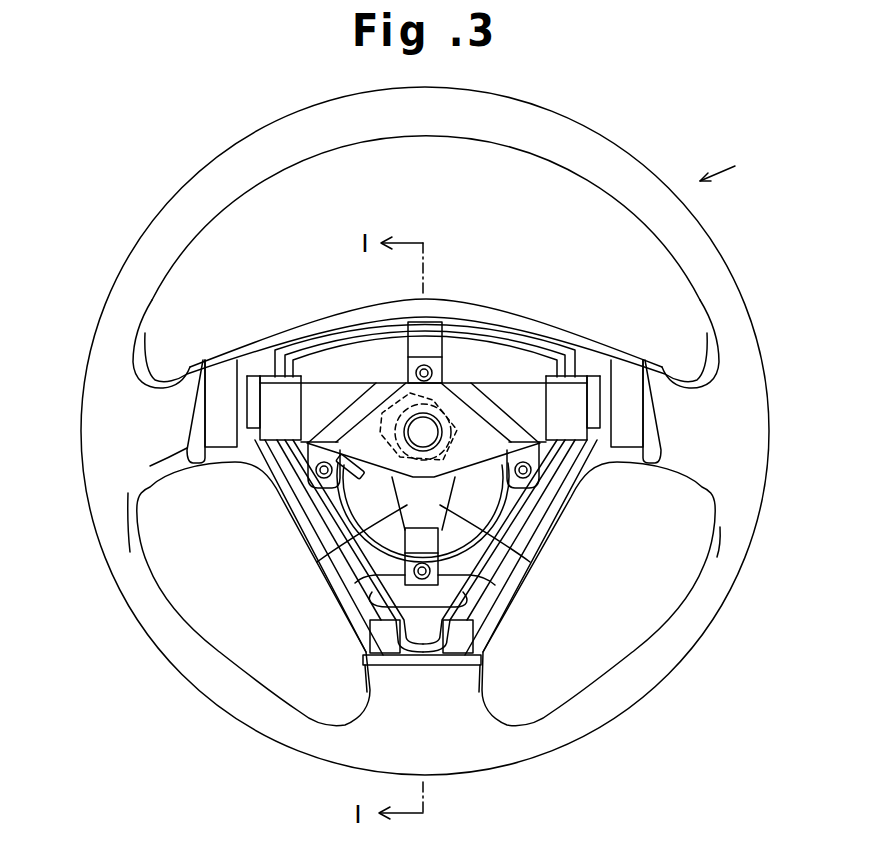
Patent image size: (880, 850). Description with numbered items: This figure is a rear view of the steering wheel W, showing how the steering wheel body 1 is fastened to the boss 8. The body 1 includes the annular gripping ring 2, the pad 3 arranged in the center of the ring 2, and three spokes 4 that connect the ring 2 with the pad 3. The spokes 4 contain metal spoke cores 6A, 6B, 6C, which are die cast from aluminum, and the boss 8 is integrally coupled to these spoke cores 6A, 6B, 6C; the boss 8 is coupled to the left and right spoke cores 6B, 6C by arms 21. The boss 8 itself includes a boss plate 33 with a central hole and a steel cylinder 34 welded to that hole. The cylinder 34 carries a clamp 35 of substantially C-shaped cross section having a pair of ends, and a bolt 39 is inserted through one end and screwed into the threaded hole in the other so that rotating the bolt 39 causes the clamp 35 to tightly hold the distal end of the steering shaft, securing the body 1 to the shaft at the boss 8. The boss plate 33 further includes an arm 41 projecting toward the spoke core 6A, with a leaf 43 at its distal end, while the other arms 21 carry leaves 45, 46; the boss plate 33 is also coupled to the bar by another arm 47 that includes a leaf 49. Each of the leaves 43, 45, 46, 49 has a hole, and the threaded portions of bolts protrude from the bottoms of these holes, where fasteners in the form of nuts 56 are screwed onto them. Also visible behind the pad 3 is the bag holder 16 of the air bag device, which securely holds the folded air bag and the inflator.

The body 1 is at (118, 621).
The gripping ring 2 is at (552, 110).
The steering wheel W is at (735, 171).
The pad 3 is at (568, 509).
The spokes 4 is at (182, 368).
The spoke core 6A is at (458, 636).
The spoke core 6B is at (633, 453).
The spoke core 6C is at (213, 461).
The boss 8 is at (458, 390).
The bag holder 16 is at (552, 535).
The arms 21 is at (258, 372).
The boss plate 33 is at (500, 386).
The cylinder 34 is at (444, 434).
The clamp 35 is at (382, 390).
The bolt 39 is at (366, 472).
The arm 41 is at (517, 554).
The leaf 43 is at (360, 595).
The leaf 45 is at (292, 486).
The leaf 46 is at (566, 460).
The arm 47 is at (445, 333).
The leaf 49 is at (443, 345).
The nuts 56 is at (424, 364).